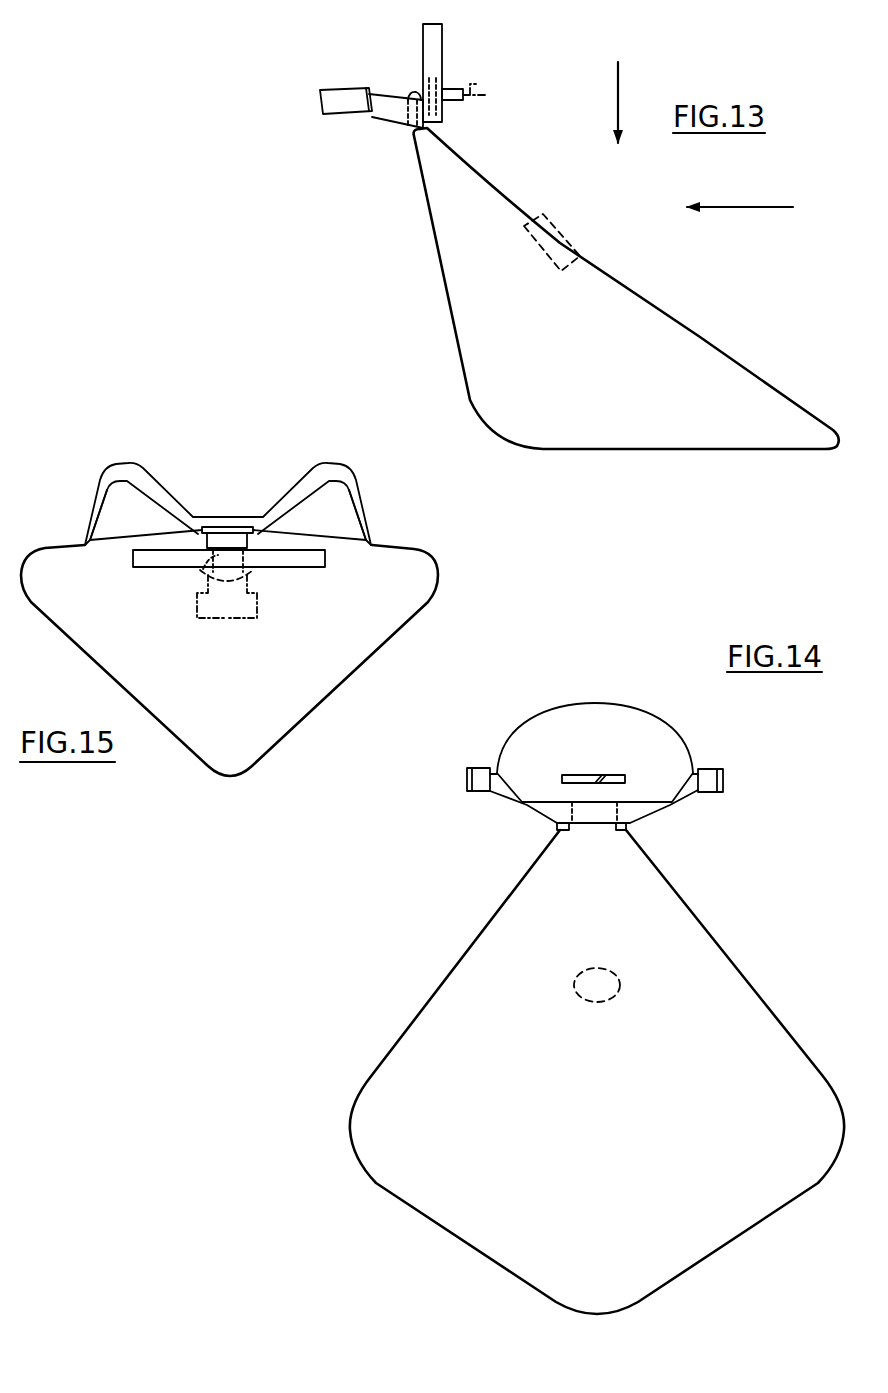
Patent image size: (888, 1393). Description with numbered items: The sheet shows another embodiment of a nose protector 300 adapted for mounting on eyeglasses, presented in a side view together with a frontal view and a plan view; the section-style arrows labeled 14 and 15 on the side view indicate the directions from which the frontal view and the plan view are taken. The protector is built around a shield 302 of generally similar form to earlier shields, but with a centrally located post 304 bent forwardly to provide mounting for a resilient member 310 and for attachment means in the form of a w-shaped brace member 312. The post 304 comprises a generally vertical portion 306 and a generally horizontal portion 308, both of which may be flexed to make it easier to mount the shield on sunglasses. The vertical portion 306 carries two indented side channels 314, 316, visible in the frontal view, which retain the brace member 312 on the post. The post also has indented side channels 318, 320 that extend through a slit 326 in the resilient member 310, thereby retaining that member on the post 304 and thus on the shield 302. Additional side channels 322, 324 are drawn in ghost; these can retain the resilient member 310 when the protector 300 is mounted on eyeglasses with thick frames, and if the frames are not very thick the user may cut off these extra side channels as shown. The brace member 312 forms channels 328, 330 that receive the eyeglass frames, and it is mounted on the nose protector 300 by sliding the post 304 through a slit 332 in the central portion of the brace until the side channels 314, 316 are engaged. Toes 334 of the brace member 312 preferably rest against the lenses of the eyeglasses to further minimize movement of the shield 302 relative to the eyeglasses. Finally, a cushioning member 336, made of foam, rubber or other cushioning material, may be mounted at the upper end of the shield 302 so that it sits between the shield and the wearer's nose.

In FIG. 13, the nose protector 300 is at (727, 323).
In FIG. 15, the nose protector 300 is at (347, 698).
In FIG. 14, the nose protector 300 is at (765, 898).
In FIG. 13, the shield 302 is at (653, 302).
In FIG. 15, the shield 302 is at (378, 643).
In FIG. 14, the shield 302 is at (754, 1002).
In FIG. 13, the post 304 is at (500, 92).
In FIG. 15, the post 304 is at (211, 645).
In FIG. 13, the vertical portion 306 is at (410, 93).
In FIG. 13, the horizontal portion 308 is at (455, 100).
In FIG. 14, the horizontal portion 308 is at (582, 775).
In FIG. 13, the resilient member 310 is at (442, 42).
In FIG. 15, the resilient member 310 is at (325, 557).
In FIG. 14, the resilient member 310 is at (668, 733).
In FIG. 13, the brace member 312 is at (320, 100).
In FIG. 15, the brace member 312 is at (135, 463).
In FIG. 14, the brace member 312 is at (652, 810).
In FIG. 14, the side channel 314 is at (630, 830).
In FIG. 14, the side channel 316 is at (557, 826).
In FIG. 13, the side channel 318 is at (425, 78).
In FIG. 15, the side channel 318 is at (195, 562).
In FIG. 15, the side channel 320 is at (250, 560).
In FIG. 13, the side channel 322 is at (477, 90).
In FIG. 15, the side channel 322 is at (205, 596).
In FIG. 15, the side channel 324 is at (258, 600).
In FIG. 13, the slit 326 is at (441, 122).
In FIG. 15, the slit 326 is at (193, 593).
In FIG. 14, the slit 326 is at (601, 775).
In FIG. 13, the channel 328 is at (354, 116).
In FIG. 15, the channel 328 is at (125, 488).
In FIG. 15, the channel 330 is at (332, 492).
In FIG. 15, the slit 332 is at (225, 528).
In FIG. 15, the toes 334 is at (88, 540).
In FIG. 14, the toes 334 is at (467, 782).
In FIG. 13, the cushioning member 336 is at (560, 243).
In FIG. 14, the cushioning member 336 is at (622, 985).
In FIG. 13, the section line 14 is at (755, 209).
In FIG. 13, the section line 15 is at (616, 84).